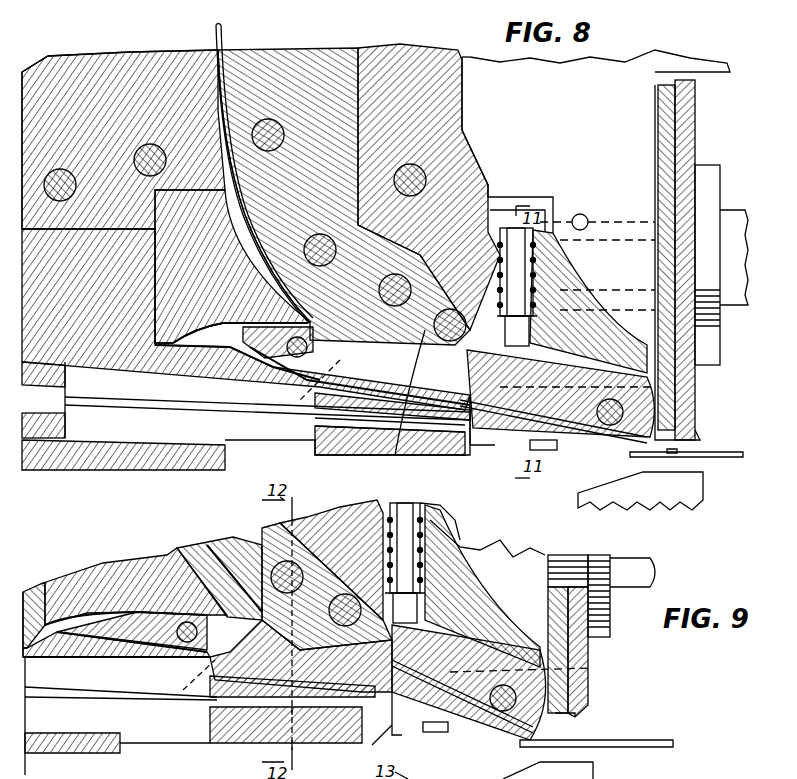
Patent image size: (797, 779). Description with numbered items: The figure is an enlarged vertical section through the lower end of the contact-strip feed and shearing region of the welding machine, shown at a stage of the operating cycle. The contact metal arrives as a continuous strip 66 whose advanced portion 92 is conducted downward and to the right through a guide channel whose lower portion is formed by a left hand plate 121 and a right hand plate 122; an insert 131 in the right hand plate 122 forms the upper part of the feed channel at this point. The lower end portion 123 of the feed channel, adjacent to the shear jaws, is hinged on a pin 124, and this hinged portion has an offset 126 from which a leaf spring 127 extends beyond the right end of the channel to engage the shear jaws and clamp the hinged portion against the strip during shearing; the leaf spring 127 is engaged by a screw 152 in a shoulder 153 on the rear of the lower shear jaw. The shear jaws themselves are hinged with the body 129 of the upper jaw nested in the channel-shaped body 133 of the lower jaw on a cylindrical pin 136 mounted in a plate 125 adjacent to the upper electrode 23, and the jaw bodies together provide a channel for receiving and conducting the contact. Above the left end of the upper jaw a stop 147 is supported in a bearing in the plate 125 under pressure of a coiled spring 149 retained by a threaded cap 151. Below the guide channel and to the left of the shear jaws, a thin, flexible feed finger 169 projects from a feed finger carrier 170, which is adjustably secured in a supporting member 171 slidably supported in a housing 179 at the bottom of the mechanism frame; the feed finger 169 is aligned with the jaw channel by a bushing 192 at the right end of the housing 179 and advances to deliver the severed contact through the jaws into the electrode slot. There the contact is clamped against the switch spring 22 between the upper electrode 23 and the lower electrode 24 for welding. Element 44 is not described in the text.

In FIG. 8, the left hand plate 121 is at (73, 66).
In FIG. 9, the left hand plate 121 is at (100, 572).
In FIG. 8, the strip 66 is at (216, 34).
In FIG. 8, the right hand plate 122 is at (313, 64).
In FIG. 9, the right hand plate 122 is at (237, 545).
In FIG. 8, the plate 125 is at (418, 55).
In FIG. 9, the plate 125 is at (314, 528).
In FIG. 8, the housing 44 is at (680, 58).
In FIG. 9, the housing 44 is at (520, 552).
In FIG. 8, the threaded cap 151 is at (535, 222).
In FIG. 9, the threaded cap 151 is at (425, 508).
In FIG. 8, the coiled spring 149 is at (545, 262).
In FIG. 9, the coiled spring 149 is at (430, 520).
In FIG. 8, the stop 147 is at (590, 320).
In FIG. 9, the stop 147 is at (470, 603).
In FIG. 8, the body 129 is at (655, 377).
In FIG. 9, the body 129 is at (539, 667).
In FIG. 8, the cylindrical pin 136 is at (630, 408).
In FIG. 9, the cylindrical pin 136 is at (475, 732).
In FIG. 8, the upper electrode 23 is at (692, 418).
In FIG. 9, the upper electrode 23 is at (590, 686).
In FIG. 8, the advanced portion 92 is at (686, 442).
In FIG. 9, the advanced portion 92 is at (383, 739).
In FIG. 8, the switch spring 22 is at (728, 460).
In FIG. 9, the switch spring 22 is at (645, 740).
In FIG. 8, the lower electrode 24 is at (703, 496).
In FIG. 9, the lower electrode 24 is at (600, 770).
In FIG. 8, the feed finger carrier 170 is at (50, 397).
In FIG. 8, the housing 179 is at (122, 345).
In FIG. 9, the housing 179 is at (78, 753).
In FIG. 8, the lower end portion 123 is at (252, 373).
In FIG. 9, the lower end portion 123 is at (140, 628).
In FIG. 8, the pin 124 is at (291, 377).
In FIG. 9, the pin 124 is at (192, 660).
In FIG. 8, the offset 126 is at (318, 398).
In FIG. 9, the offset 126 is at (200, 703).
In FIG. 8, the feed finger 169 is at (133, 407).
In FIG. 9, the feed finger 169 is at (105, 705).
In FIG. 8, the supporting member 171 is at (55, 432).
In FIG. 8, the leaf spring 127 is at (318, 438).
In FIG. 9, the leaf spring 127 is at (294, 745).
In FIG. 8, the bushing 192 is at (353, 440).
In FIG. 9, the bushing 192 is at (230, 747).
In FIG. 8, the insert 131 is at (402, 458).
In FIG. 9, the insert 131 is at (235, 590).
In FIG. 8, the screw 152 is at (520, 450).
In FIG. 9, the screw 152 is at (420, 728).
In FIG. 8, the shoulder 153 is at (548, 455).
In FIG. 9, the shoulder 153 is at (450, 735).
In FIG. 8, the channel-shaped body 133 is at (580, 450).
In FIG. 9, the channel-shaped body 133 is at (497, 745).